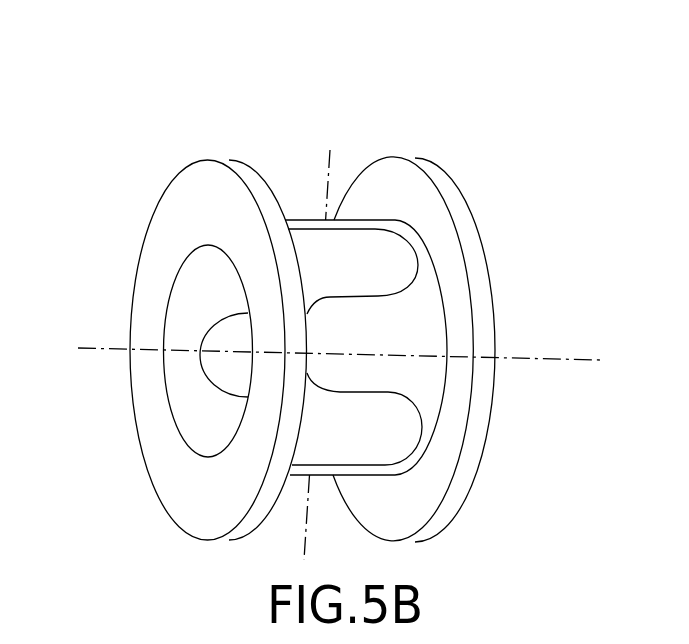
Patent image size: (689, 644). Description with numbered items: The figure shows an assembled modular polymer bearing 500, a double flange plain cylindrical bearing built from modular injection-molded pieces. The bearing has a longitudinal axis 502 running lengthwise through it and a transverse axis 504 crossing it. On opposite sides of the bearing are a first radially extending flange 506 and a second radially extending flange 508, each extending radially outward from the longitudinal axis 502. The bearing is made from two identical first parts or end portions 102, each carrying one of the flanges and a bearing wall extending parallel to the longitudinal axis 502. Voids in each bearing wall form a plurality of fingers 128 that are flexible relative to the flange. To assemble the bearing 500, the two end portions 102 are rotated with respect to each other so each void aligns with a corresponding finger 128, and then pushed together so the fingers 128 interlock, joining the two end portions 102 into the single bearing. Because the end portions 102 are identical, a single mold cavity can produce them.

The modular polymer bearing 500 is at (342, 305).
The longitudinal axis 502 is at (605, 362).
The transverse axis 504 is at (327, 158).
The first radially extending flange 506 is at (197, 196).
The second radially extending flange 508 is at (458, 192).
The first part or end portion 102 is at (146, 244).
The fingers 128 is at (388, 276).